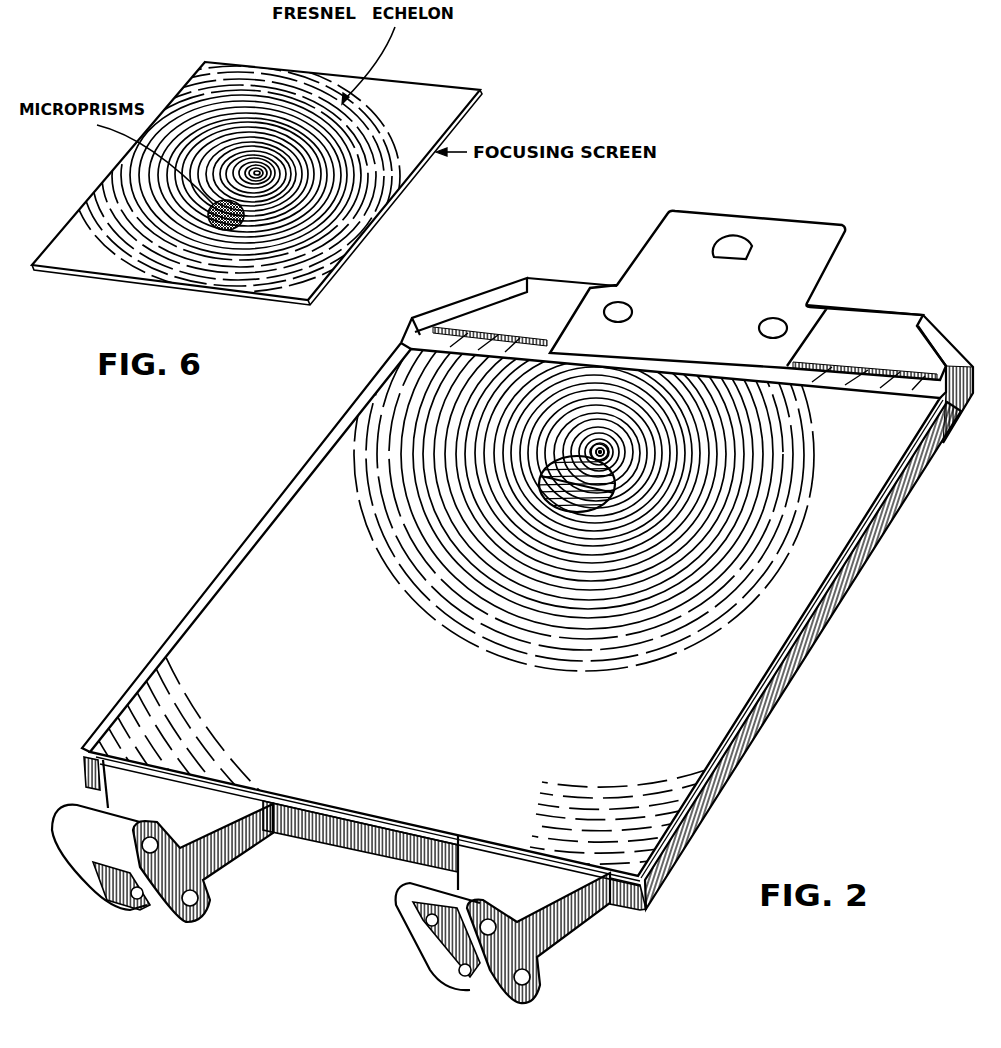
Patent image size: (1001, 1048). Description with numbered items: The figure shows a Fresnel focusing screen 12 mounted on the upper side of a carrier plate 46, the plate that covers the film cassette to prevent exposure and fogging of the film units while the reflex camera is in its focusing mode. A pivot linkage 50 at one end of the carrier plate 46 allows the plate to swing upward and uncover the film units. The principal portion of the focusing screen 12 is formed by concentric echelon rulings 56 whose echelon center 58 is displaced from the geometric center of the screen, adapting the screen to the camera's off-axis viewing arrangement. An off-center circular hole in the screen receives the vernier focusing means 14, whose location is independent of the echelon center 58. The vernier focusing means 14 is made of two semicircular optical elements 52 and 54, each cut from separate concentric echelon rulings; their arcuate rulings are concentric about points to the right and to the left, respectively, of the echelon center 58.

The Fresnel focusing screen 12 is at (318, 503).
The vernier focusing means 14 is at (545, 457).
The carrier plate 46 is at (745, 751).
The pivot linkage 50 is at (203, 913).
The semicircular optical element 52 is at (598, 455).
The semicircular optical element 54 is at (583, 512).
The echelon rulings 56 is at (746, 576).
The echelon center 58 is at (604, 452).